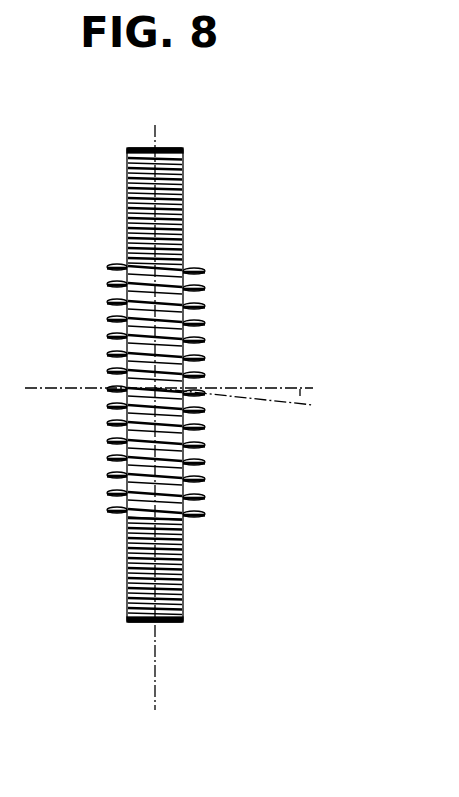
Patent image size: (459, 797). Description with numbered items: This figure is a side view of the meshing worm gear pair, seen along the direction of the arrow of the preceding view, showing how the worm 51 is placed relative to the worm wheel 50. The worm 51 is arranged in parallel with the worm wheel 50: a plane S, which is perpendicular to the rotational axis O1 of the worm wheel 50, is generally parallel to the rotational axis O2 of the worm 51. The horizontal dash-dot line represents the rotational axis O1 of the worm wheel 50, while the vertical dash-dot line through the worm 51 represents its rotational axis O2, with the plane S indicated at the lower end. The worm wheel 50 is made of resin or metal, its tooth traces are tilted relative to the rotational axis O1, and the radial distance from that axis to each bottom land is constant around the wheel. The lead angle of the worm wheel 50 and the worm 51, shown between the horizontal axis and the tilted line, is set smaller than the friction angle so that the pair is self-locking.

The worm wheel 50 is at (183, 148).
The worm 51 is at (202, 511).
The rotational axis of the worm wheel O1 is at (80, 388).
The rotational axis of the worm O2 is at (155, 662).
The plane S is at (155, 677).